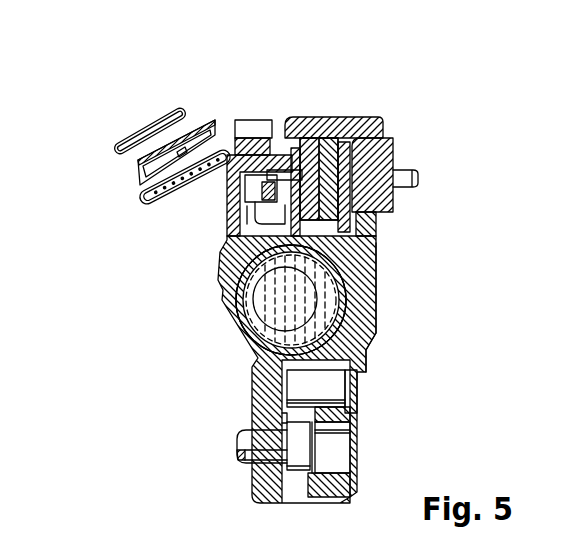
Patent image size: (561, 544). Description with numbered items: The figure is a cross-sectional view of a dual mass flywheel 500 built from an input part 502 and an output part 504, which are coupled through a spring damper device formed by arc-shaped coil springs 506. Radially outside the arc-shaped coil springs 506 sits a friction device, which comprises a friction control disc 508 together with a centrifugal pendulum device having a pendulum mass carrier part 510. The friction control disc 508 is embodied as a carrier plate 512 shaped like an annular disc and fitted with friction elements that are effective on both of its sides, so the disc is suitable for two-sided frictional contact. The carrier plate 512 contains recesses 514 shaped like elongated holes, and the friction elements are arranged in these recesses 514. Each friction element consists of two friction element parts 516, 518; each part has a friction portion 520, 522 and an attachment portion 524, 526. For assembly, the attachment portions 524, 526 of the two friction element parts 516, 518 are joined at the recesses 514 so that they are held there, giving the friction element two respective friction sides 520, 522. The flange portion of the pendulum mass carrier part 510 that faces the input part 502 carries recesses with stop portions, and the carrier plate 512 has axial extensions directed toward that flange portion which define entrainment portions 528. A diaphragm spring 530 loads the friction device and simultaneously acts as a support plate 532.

The dual mass flywheel 500 is at (370, 443).
The input part 502 is at (248, 310).
The output part 504 is at (382, 306).
The arc-shaped coil springs 506 is at (360, 357).
The friction control disc 508 is at (287, 180).
The pendulum mass carrier part 510 is at (373, 245).
The carrier plate 512 is at (210, 120).
The recesses 514 is at (197, 118).
The friction element part 516 is at (105, 99).
The friction element part 518 is at (152, 221).
The friction portion 520 is at (105, 99).
The friction portion 522 is at (152, 200).
The attachment portion 524 is at (150, 94).
The attachment portion 526 is at (153, 190).
The entrainment portions 528 is at (168, 145).
The diaphragm spring 530 is at (232, 211).
The support plate 532 is at (230, 200).